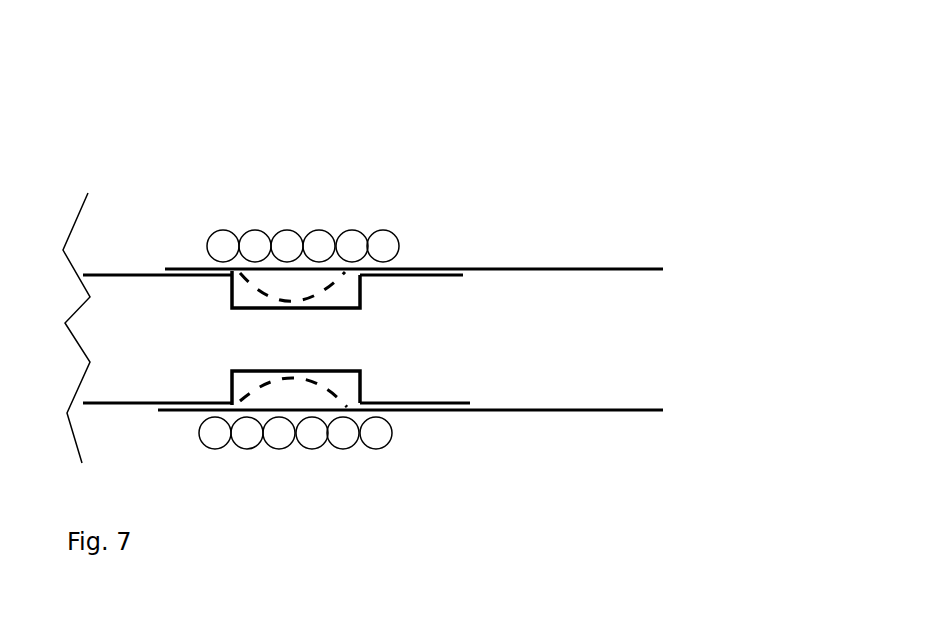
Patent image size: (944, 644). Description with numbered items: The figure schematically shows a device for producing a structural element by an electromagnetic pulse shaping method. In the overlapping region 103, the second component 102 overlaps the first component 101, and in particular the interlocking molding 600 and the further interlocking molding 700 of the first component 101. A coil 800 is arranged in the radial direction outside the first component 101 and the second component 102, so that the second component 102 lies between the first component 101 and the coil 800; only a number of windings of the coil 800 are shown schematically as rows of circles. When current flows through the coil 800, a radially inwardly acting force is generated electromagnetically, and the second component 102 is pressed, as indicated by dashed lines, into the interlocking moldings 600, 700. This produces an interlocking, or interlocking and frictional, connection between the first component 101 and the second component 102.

The first component 101 is at (164, 310).
The second component 102 is at (490, 266).
The overlapping region 103 is at (271, 155).
The interlocking molding 600 is at (263, 373).
The further interlocking molding 700 is at (337, 310).
The coil 800 is at (353, 230).